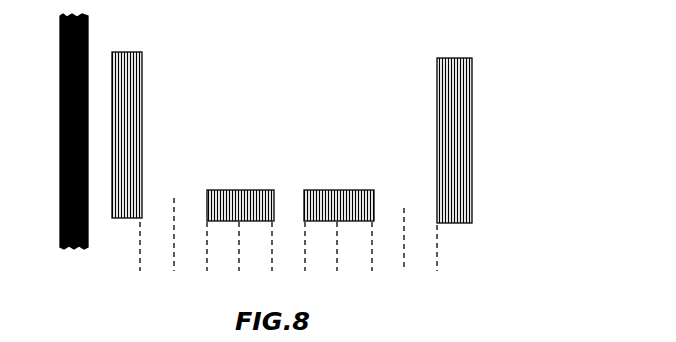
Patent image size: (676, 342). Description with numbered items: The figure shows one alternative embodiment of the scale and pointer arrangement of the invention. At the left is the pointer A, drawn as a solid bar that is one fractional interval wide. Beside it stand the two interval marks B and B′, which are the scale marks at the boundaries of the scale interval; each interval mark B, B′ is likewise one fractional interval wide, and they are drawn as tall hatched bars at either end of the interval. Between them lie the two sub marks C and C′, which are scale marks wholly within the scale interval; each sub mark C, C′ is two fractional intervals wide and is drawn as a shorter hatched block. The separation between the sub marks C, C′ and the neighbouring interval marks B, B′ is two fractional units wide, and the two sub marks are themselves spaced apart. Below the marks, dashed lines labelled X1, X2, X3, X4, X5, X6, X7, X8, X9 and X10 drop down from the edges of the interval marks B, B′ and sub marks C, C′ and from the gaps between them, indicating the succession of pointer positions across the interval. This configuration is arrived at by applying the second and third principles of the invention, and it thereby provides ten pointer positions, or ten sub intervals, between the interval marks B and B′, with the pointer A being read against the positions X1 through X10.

The pointer A is at (60, 50).
The interval mark B is at (137, 75).
The interval mark B′ is at (468, 81).
The sub mark C is at (240, 190).
The sub mark C′ is at (339, 191).
The position line X1 is at (140, 256).
The position line X2 is at (174, 244).
The position line X3 is at (207, 256).
The position line X4 is at (239, 256).
The position line X5 is at (272, 256).
The position line X6 is at (305, 256).
The position line X7 is at (337, 256).
The position line X8 is at (372, 256).
The position line X9 is at (404, 249).
The position line X10 is at (441, 258).